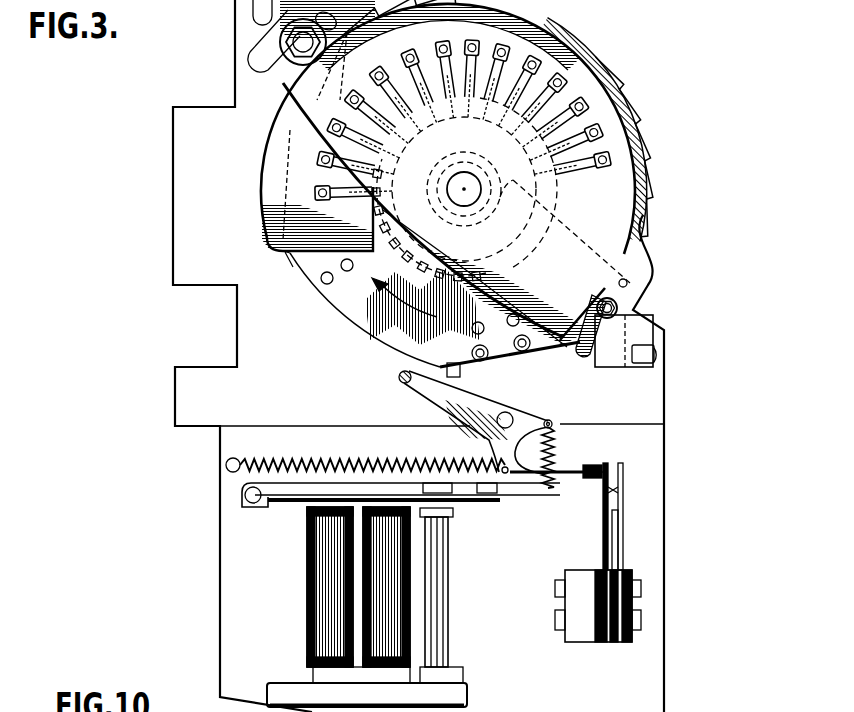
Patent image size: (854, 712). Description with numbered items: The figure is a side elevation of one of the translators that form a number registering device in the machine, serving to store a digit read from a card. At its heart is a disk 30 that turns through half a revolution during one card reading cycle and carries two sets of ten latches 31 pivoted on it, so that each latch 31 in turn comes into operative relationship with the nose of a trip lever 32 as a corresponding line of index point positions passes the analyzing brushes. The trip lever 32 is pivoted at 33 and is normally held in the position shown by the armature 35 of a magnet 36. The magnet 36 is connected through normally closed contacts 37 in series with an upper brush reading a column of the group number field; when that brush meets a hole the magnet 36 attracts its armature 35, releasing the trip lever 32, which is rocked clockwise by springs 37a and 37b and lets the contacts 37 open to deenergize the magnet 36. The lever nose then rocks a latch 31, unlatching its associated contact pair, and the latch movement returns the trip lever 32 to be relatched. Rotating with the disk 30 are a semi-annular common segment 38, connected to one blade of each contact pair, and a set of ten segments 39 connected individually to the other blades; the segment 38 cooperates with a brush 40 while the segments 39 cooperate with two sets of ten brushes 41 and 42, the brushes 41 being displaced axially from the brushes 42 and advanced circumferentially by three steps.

The disk 30 is at (337, 305).
The latches 31 is at (470, 373).
The trip lever 32 is at (401, 382).
The pivot 33 is at (508, 418).
The armature 35 is at (490, 492).
The magnet 36 is at (318, 580).
The contacts 37 is at (612, 473).
The spring 37a is at (554, 463).
The spring 37b is at (460, 466).
The semi-annular common segment 38 is at (422, 302).
The segments 39 is at (427, 236).
The brush 40 is at (446, 189).
The brushes 41 is at (463, 129).
The brushes 42 is at (464, 189).